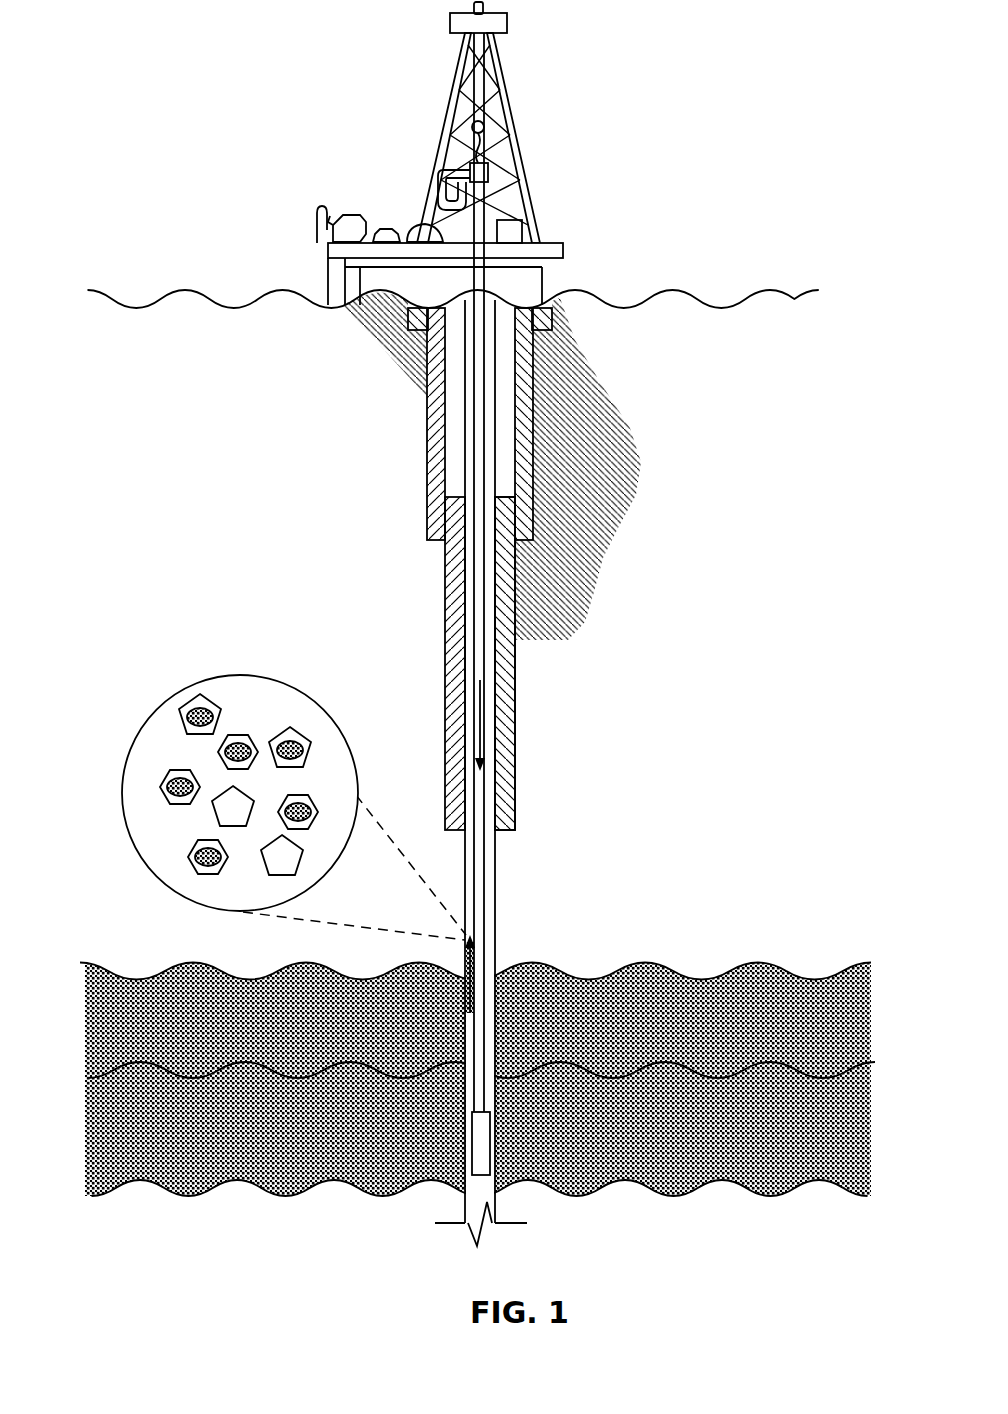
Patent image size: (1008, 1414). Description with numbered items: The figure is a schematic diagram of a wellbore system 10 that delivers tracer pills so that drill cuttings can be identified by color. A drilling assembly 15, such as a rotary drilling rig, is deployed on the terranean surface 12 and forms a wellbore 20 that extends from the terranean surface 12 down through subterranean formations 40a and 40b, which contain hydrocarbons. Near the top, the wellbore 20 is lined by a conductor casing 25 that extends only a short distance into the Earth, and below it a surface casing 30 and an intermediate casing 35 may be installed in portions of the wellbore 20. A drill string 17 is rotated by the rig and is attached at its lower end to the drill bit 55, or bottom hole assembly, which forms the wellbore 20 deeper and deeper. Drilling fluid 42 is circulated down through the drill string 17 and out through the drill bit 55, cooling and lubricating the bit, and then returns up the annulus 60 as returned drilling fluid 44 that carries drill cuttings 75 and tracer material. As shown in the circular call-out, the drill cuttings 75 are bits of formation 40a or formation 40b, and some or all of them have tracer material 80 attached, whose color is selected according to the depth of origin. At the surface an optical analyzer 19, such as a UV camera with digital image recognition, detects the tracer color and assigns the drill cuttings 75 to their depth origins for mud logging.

The wellbore system 10 is at (166, 21).
The terranean surface 12 is at (771, 279).
The drilling assembly 15 is at (434, 105).
The drill string 17 is at (505, 670).
The optical analyzer 19 is at (522, 232).
The wellbore 20 is at (497, 443).
The conductor casing 25 is at (556, 322).
The surface casing 30 is at (427, 460).
The intermediate casing 35 is at (447, 617).
The subterranean formation 40a is at (662, 972).
The subterranean formation 40b is at (700, 1183).
The drilling fluid 42 is at (482, 717).
The returned drilling fluid 44 is at (465, 1010).
The drill bit 55 is at (488, 1140).
The annulus 60 is at (488, 902).
The drill cuttings 75 is at (178, 712).
The tracer material 80 is at (307, 748).